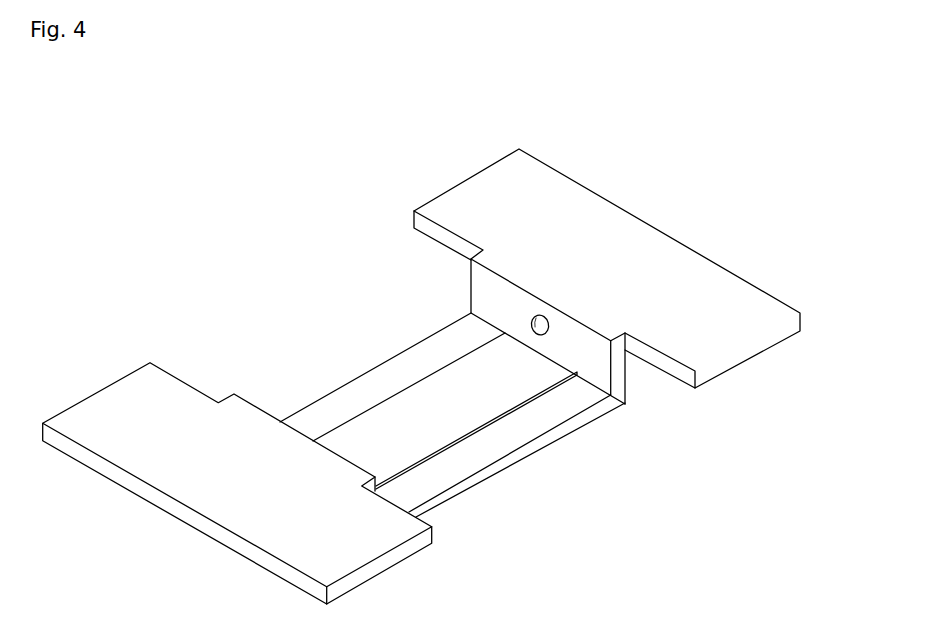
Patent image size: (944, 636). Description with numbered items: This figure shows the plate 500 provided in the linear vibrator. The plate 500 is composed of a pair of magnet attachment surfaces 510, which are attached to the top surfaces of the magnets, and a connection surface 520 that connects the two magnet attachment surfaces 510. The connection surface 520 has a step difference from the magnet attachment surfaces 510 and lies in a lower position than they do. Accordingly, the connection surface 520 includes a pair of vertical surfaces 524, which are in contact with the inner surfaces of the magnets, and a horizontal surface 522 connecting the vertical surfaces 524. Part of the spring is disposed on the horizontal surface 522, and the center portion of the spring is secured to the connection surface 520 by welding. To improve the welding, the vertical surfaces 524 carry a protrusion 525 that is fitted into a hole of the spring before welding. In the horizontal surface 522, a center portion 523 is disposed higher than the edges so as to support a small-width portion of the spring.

The plate 500 is at (648, 160).
The magnet attachment surface 510 is at (472, 190).
The connection surface 520 is at (452, 350).
The horizontal surface 522 is at (392, 373).
The center portion 523 is at (358, 430).
The vertical surface 524 is at (478, 287).
The protrusion 525 is at (536, 335).